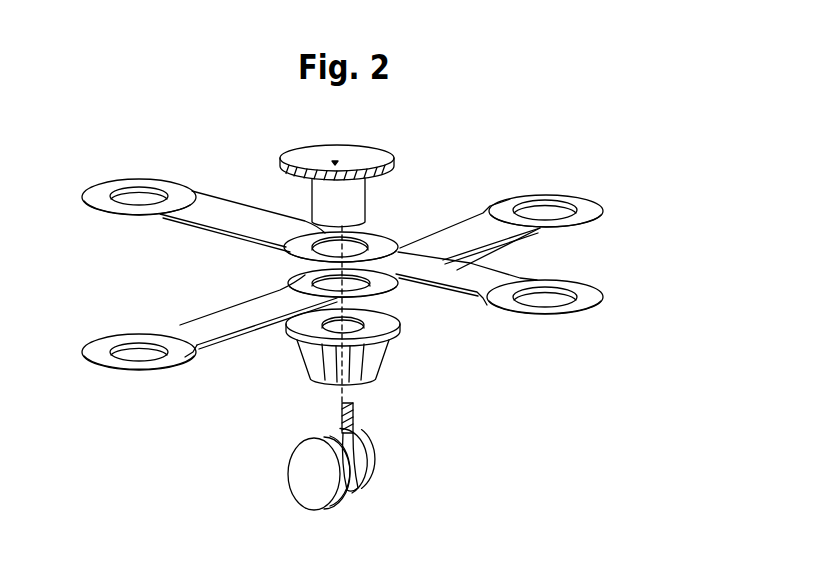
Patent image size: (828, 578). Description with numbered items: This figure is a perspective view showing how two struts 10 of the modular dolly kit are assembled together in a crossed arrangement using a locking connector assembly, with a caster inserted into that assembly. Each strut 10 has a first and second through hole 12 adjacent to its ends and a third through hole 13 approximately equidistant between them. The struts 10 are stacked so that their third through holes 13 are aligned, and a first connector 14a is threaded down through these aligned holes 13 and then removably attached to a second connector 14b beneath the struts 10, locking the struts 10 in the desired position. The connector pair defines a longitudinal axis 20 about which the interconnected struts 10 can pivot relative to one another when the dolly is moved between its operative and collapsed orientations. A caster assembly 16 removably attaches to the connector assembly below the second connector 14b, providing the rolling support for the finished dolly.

The strut 10 is at (543, 228).
The first and second through holes 12 is at (140, 195).
The third through hole 13 is at (310, 257).
The first connector 14a is at (388, 148).
The second connector 14b is at (388, 345).
The caster assembly 16 is at (290, 477).
The longitudinal axis 20 is at (398, 303).